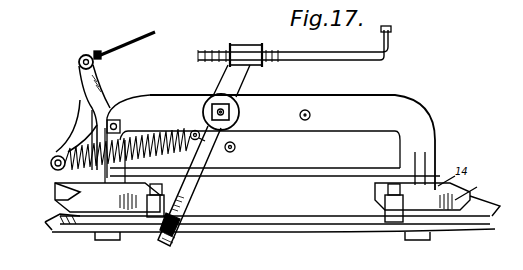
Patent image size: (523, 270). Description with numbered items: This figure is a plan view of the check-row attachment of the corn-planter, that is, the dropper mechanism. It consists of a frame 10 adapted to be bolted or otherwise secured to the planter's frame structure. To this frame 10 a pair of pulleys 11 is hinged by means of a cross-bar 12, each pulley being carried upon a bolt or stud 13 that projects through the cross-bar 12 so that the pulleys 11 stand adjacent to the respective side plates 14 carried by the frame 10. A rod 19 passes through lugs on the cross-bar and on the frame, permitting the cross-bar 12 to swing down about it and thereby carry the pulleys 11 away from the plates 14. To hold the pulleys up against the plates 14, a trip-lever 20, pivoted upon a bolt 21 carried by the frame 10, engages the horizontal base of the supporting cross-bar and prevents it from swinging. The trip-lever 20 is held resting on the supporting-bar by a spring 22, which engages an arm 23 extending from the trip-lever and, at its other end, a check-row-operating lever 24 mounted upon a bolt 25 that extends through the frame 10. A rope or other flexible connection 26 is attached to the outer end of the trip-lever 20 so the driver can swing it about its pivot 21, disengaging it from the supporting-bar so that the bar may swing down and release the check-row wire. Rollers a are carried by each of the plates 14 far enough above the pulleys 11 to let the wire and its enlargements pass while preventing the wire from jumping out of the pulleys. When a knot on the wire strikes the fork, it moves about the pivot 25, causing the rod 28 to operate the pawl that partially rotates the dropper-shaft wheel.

The frame 10 is at (271, 142).
The pulleys 11 is at (58, 226).
The cross-bar 12 is at (271, 220).
The bolt or stud 13 is at (106, 236).
The side plates 14 is at (107, 170).
The rod 19 is at (297, 173).
The trip-lever 20 is at (83, 55).
The bolt 21 is at (118, 120).
The spring 22 is at (161, 134).
The arm 23 is at (56, 151).
The check-row-operating lever 24 is at (92, 110).
The bolt 25 is at (228, 112).
The rope or flexible connection 26 is at (117, 52).
The rod 28 is at (390, 46).
The rollers a is at (163, 202).